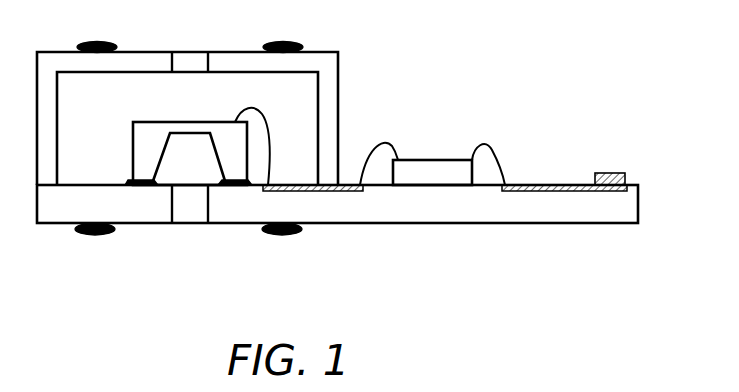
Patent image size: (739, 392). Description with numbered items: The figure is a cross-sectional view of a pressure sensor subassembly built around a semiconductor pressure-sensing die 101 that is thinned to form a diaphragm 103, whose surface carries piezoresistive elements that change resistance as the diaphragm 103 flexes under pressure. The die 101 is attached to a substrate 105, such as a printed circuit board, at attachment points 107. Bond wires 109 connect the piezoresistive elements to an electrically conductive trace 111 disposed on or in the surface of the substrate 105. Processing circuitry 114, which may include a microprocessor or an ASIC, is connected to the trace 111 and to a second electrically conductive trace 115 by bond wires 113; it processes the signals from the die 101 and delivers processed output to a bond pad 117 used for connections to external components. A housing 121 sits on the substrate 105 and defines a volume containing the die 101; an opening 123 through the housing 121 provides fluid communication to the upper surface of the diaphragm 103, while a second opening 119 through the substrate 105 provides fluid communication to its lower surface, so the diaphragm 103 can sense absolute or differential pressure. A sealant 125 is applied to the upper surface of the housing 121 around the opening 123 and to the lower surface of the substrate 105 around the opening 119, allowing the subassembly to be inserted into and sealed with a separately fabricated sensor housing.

The pressure-sensing die 101 is at (145, 142).
The diaphragm 103 is at (190, 122).
The substrate 105 is at (628, 204).
The attachment points 107 is at (220, 180).
The bond wires 109 is at (265, 125).
The electrically conductive trace 111 is at (278, 182).
The bond wires 113 is at (360, 166).
The processing circuitry 114 is at (440, 158).
The electrically conductive trace 115 is at (552, 184).
The bond pad 117 is at (616, 173).
The second opening 119 is at (195, 210).
The housing 121 is at (340, 68).
The opening 123 is at (191, 63).
The sealant 125 is at (92, 42).